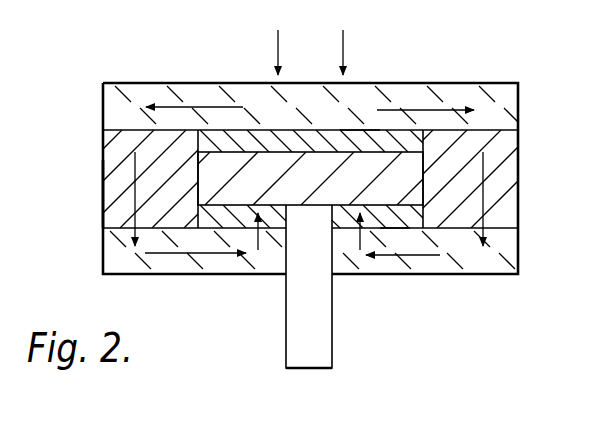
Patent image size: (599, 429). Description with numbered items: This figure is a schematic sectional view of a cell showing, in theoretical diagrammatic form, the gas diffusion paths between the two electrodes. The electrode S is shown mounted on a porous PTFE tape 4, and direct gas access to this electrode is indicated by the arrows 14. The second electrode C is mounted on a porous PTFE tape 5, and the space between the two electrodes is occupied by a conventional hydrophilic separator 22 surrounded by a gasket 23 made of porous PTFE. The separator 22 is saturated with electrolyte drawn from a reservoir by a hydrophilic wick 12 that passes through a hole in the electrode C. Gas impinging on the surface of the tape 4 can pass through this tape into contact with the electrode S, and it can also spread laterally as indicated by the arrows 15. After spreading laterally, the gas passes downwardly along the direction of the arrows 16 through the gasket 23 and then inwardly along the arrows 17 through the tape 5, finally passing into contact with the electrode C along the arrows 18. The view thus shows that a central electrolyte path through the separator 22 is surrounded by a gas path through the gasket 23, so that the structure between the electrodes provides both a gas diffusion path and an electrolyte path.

The porous PTFE tape 4 is at (519, 108).
The porous PTFE tape 5 is at (503, 262).
The hydrophilic wick 12 is at (300, 335).
The arrows 14 is at (343, 30).
The arrows 15 is at (205, 82).
The arrows 16 is at (133, 163).
The arrows 17 is at (205, 256).
The arrows 18 is at (253, 240).
The hydrophilic separator 22 is at (417, 190).
The gasket 23 is at (112, 190).
The electrode S is at (358, 130).
The electrode C is at (395, 218).